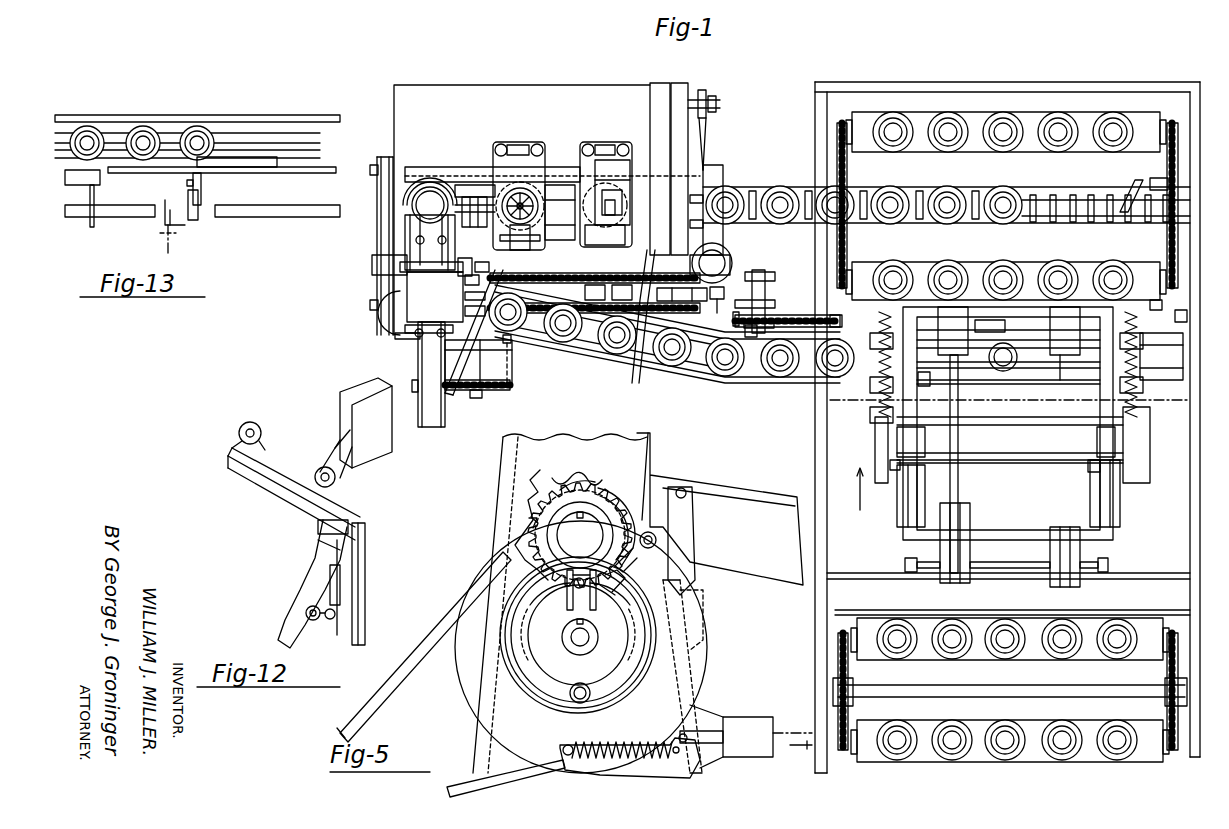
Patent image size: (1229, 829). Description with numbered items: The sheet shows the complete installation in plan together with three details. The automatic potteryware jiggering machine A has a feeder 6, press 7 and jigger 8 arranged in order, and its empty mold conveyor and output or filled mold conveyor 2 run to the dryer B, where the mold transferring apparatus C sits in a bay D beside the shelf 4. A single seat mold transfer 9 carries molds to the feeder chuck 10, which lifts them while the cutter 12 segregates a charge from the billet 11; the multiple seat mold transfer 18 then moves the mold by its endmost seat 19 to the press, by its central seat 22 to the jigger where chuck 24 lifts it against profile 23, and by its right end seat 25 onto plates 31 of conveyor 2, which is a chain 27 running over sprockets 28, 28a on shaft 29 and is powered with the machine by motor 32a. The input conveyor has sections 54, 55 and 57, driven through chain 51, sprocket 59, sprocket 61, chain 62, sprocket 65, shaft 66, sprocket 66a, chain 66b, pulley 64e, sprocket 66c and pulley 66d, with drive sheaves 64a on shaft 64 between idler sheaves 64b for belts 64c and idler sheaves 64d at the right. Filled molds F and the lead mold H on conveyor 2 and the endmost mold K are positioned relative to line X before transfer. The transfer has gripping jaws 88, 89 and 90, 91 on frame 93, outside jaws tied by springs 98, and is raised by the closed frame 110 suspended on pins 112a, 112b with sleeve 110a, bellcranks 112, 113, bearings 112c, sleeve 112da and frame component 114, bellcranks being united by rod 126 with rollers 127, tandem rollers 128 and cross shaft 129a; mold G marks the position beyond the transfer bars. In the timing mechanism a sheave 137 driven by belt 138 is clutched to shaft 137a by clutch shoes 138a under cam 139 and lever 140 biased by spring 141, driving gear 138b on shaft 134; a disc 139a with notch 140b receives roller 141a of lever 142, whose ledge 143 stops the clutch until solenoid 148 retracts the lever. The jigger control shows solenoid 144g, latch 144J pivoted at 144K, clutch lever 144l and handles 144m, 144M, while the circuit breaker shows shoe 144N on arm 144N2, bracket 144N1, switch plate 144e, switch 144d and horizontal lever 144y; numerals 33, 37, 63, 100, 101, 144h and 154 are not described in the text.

In FIG. 1, the output or filled mold conveyor 2 is at (795, 63).
In FIG. 13, the output or filled mold conveyor 2 is at (268, 120).
In FIG. 1, the shelf 4 is at (1092, 262).
In FIG. 1, the feeder 6 is at (431, 297).
In FIG. 1, the press 7 is at (550, 220).
In FIG. 1, the jigger 8 is at (349, 67).
In FIG. 1, the single seat mold transfer 9 is at (396, 341).
In FIG. 1, the feeder chuck 10 is at (413, 205).
In FIG. 1, the billet 11 is at (424, 392).
In FIG. 1, the cutter 12 is at (420, 204).
In FIG. 1, the multiple seat mold transfer 18 is at (426, 170).
In FIG. 1, the endmost mold seat 19 is at (438, 180).
In FIG. 1, the central seat 22 is at (478, 206).
In FIG. 1, the profile 23 is at (647, 200).
In FIG. 1, the chuck 24 is at (608, 163).
In FIG. 1, the right end seat 25 is at (578, 156).
In FIG. 1, the chain 27 is at (1099, 190).
In FIG. 1, the sprocket 28 is at (700, 205).
In FIG. 1, the sprocket 28a is at (1156, 224).
In FIG. 1, the shaft 29 is at (700, 245).
In FIG. 1, the transversely spaced plates 31 is at (1064, 224).
In FIG. 1, the motor 32a is at (728, 258).
In FIG. 1, the bracket 33 is at (476, 261).
In FIG. 1, the platform 37 is at (490, 368).
In FIG. 1, the chain 51 is at (456, 390).
In FIG. 1, the conveyor section 54 is at (400, 350).
In FIG. 1, the conveyor section 55 is at (513, 354).
In FIG. 1, the conveyor section 57 is at (745, 398).
In FIG. 1, the sprocket 59 is at (722, 296).
In FIG. 1, the sprocket 61 is at (644, 290).
In FIG. 1, the chain 62 is at (600, 293).
In FIG. 1, the gear 63 is at (472, 283).
In FIG. 1, the shaft 64 is at (546, 285).
In FIG. 1, the drive sheaves 64a is at (517, 371).
In FIG. 1, the idler sheaves 64b is at (475, 312).
In FIG. 1, the belts 64c is at (475, 297).
In FIG. 1, the idler sheaves 64d is at (750, 382).
In FIG. 1, the pulley 64e is at (934, 384).
In FIG. 1, the sprocket 65 is at (792, 283).
In FIG. 1, the shaft 66 is at (772, 296).
In FIG. 1, the sprocket 66a is at (778, 316).
In FIG. 1, the chain 66b is at (850, 436).
In FIG. 1, the sprocket 66c is at (1176, 436).
In FIG. 1, the pulley 66d is at (1163, 391).
In FIG. 1, the mold gripping jaw 88 is at (977, 293).
In FIG. 1, the mold gripping jaw 89 is at (1032, 293).
In FIG. 1, the mold gripping jaw 90 is at (976, 395).
In FIG. 13, the mold gripping jaw 90 is at (82, 182).
In FIG. 1, the mold gripping jaw 91 is at (1055, 414).
In FIG. 13, the mold gripping jaw 91 is at (320, 223).
In FIG. 1, the frame 93 is at (1012, 449).
In FIG. 1, the springs 98 is at (1130, 438).
In FIG. 1, the plate 100 is at (882, 434).
In FIG. 1, the spring 101 is at (880, 422).
In FIG. 1, the closed frame 110 is at (996, 535).
In FIG. 1, the elongated sleeve 110a is at (1004, 353).
In FIG. 1, the bellcranks 112 is at (978, 524).
In FIG. 1, the elongated pin 112a is at (1072, 310).
In FIG. 1, the elongated pin 112b is at (1100, 566).
In FIG. 1, the bearings 112c is at (907, 564).
In FIG. 1, the sleeve 112da is at (1025, 557).
In FIG. 1, the bellcrank 113 is at (1050, 346).
In FIG. 1, the vertical frame component 114 is at (1139, 563).
In FIG. 1, the rod / suspension members 126 is at (964, 480).
In FIG. 1, the rollers 127 is at (1094, 447).
In FIG. 1, the tandem rollers 128 is at (1108, 506).
In FIG. 1, the cross shaft 129a is at (1078, 469).
In FIG. 5, the shaft 134 is at (580, 535).
In FIG. 5, the sheave 137 is at (468, 670).
In FIG. 5, the shaft 137a is at (568, 641).
In FIG. 5, the belt 138 is at (433, 634).
In FIG. 5, the clutch shoes 138a is at (530, 612).
In FIG. 5, the gear 138b is at (537, 488).
In FIG. 5, the cam 139 is at (577, 611).
In FIG. 5, the disc 139a is at (577, 482).
In FIG. 5, the operating lever 140 is at (625, 568).
In FIG. 5, the peripheral notch 140b is at (594, 497).
In FIG. 5, the spring 141 is at (622, 573).
In FIG. 5, the roller 141a is at (657, 536).
In FIG. 5, the lever 142 is at (696, 518).
In FIG. 5, the ledge 143 is at (703, 672).
In FIG. 13, the mercury switch 144d is at (192, 230).
In FIG. 13, the switch plate 144e is at (190, 214).
In FIG. 12, the solenoid / solenoid armature 144g is at (389, 458).
In FIG. 12, the link 144h is at (332, 451).
In FIG. 12, the latch 144J is at (266, 482).
In FIG. 12, the pivot 144K is at (238, 439).
In FIG. 12, the clutch lever 144l is at (364, 556).
In FIG. 12, the pivoted handle 144m is at (298, 590).
In FIG. 1, the pivoted handle 144M is at (671, 327).
In FIG. 13, the shoe 144N is at (246, 161).
In FIG. 13, the bracket 144N1 is at (202, 186).
In FIG. 13, the arm 144N2 is at (232, 214).
In FIG. 1, the horizontal lever 144y is at (1140, 184).
In FIG. 5, the solenoid 148 is at (742, 720).
In FIG. 1, the wheel block 154 is at (557, 146).
In FIG. 1, the automatic potteryware jiggering machine A is at (538, 86).
In FIG. 1, the dryer B is at (1200, 760).
In FIG. 1, the mold transferring apparatus C is at (1015, 420).
In FIG. 1, the bay D is at (1010, 445).
In FIG. 1, the filled molds F is at (880, 190).
In FIG. 1, the mold G is at (839, 382).
In FIG. 1, the lead filled mold H is at (999, 188).
In FIG. 1, the right hand endmost mold K is at (1009, 375).
In FIG. 13, the right hand endmost mold K is at (204, 124).
In FIG. 1, the line X- X is at (918, 277).
In FIG. 13, the line X- X is at (115, 193).